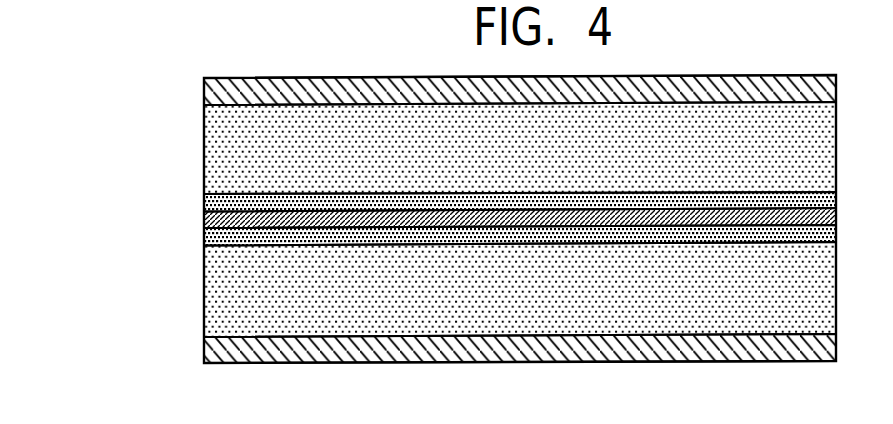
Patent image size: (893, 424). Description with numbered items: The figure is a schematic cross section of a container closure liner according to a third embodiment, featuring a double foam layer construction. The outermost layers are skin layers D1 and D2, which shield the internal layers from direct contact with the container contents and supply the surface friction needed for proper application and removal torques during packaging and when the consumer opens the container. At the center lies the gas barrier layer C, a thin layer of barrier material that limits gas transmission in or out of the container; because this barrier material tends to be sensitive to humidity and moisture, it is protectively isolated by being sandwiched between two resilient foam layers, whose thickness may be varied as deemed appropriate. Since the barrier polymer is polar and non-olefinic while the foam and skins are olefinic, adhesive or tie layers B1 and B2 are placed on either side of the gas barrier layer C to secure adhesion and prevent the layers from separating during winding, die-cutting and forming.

The skin layer D1 is at (215, 88).
The adhesive layer B1 is at (212, 205).
The gas barrier layer C is at (210, 221).
The adhesive layer B2 is at (212, 239).
The skin layer D2 is at (215, 356).